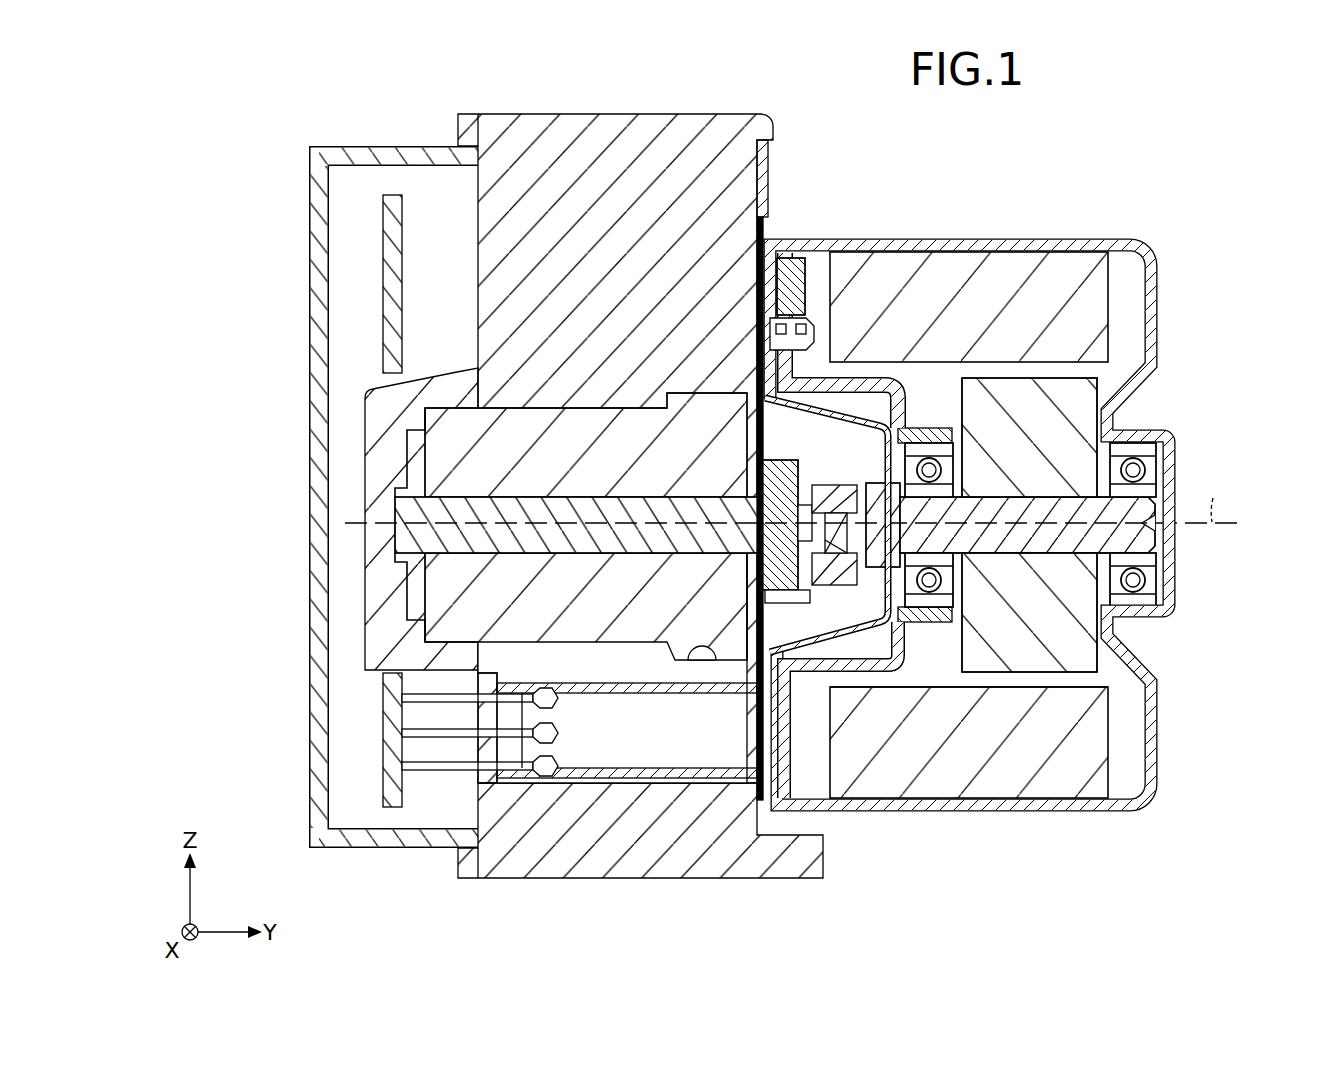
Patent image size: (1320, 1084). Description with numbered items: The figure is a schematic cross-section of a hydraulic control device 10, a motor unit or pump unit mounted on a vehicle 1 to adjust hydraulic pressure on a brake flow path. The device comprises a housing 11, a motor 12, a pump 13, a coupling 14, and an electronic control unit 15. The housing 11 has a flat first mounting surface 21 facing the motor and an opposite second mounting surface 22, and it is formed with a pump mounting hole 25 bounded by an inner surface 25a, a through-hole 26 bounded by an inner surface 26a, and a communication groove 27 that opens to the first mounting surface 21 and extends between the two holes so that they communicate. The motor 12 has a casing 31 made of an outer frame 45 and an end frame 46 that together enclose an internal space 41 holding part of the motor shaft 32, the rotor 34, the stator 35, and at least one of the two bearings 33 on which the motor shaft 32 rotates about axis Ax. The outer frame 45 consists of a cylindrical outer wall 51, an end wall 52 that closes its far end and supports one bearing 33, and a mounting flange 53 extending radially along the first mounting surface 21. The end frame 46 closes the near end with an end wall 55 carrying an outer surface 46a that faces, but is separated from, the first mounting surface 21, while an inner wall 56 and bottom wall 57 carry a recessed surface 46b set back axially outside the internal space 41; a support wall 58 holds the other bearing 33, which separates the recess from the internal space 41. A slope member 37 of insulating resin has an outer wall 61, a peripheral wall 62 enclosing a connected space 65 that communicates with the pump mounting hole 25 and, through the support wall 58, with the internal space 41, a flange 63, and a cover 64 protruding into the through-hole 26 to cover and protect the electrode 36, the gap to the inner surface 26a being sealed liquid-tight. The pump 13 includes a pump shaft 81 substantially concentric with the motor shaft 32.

The vehicle 1 is at (246, 122).
The hydraulic control device 10 is at (750, 108).
The housing 11 is at (635, 135).
The motor 12 is at (991, 505).
The pump 13 is at (400, 444).
The coupling 14 is at (836, 490).
The electronic control unit 15 is at (383, 275).
The first mounting surface 21 is at (770, 185).
The second mounting surface 22 is at (478, 200).
The pump mounting hole 25 is at (495, 662).
The inner surface 25a is at (692, 650).
The through-hole 26 is at (627, 860).
The inner surface 26a is at (616, 760).
The communication groove 27 is at (750, 640).
The casing 31 is at (984, 471).
The motor shaft 32 is at (1045, 545).
The bearings 33 is at (930, 445).
The rotor 34 is at (1000, 660).
The stator 35 is at (969, 566).
The electrode 36 is at (448, 775).
The slope member 37 is at (842, 411).
The internal space 41 is at (984, 505).
The outer frame 45 is at (984, 471).
The end frame 46 is at (780, 251).
The outer surface 46a is at (771, 211).
The recessed surface 46b is at (841, 751).
The outer wall 51 is at (991, 505).
The end wall 52 is at (991, 505).
The mounting flange 53 is at (770, 160).
The end wall 55 is at (797, 780).
The inner wall 56 is at (838, 665).
The bottom wall 57 is at (938, 690).
The support wall 58 is at (926, 455).
The outer wall 61 is at (757, 295).
The peripheral wall 62 is at (864, 400).
The flange 63 is at (948, 409).
The cover 64 is at (562, 778).
The connected space 65 is at (806, 335).
The pump shaft 81 is at (410, 505).